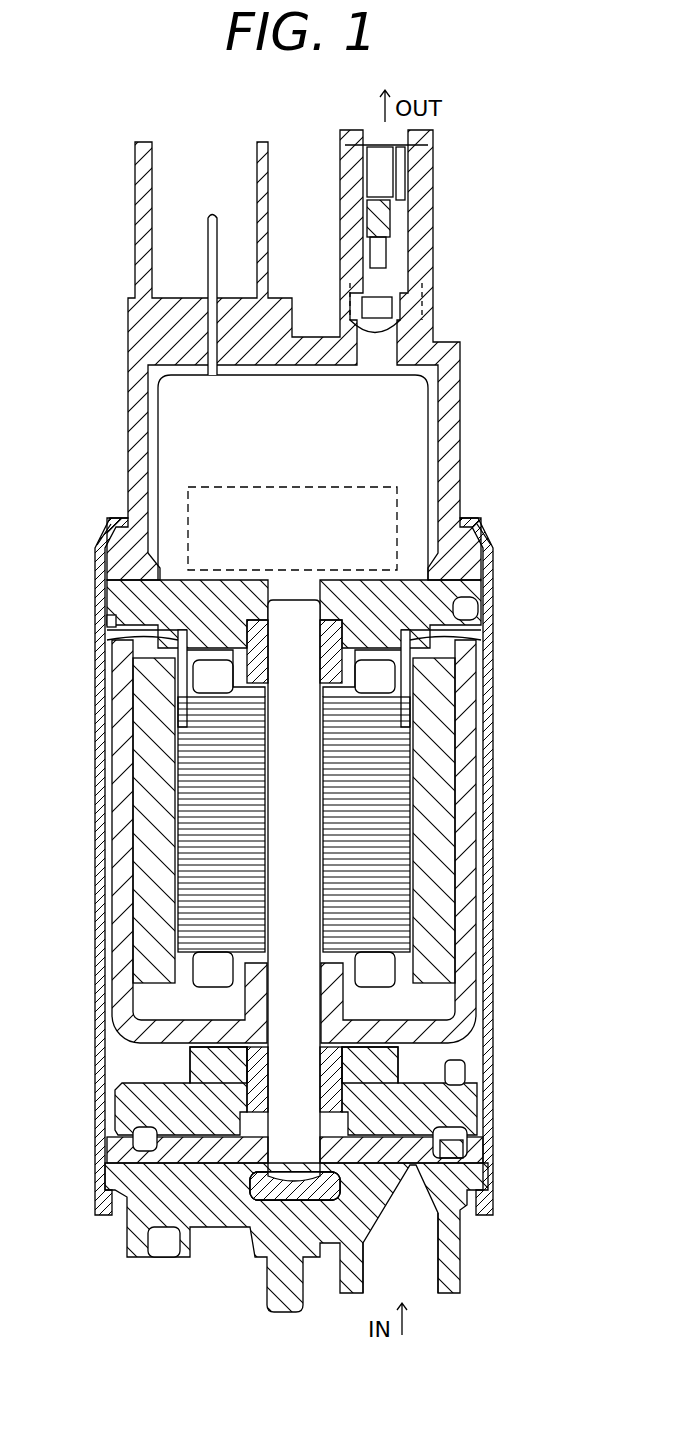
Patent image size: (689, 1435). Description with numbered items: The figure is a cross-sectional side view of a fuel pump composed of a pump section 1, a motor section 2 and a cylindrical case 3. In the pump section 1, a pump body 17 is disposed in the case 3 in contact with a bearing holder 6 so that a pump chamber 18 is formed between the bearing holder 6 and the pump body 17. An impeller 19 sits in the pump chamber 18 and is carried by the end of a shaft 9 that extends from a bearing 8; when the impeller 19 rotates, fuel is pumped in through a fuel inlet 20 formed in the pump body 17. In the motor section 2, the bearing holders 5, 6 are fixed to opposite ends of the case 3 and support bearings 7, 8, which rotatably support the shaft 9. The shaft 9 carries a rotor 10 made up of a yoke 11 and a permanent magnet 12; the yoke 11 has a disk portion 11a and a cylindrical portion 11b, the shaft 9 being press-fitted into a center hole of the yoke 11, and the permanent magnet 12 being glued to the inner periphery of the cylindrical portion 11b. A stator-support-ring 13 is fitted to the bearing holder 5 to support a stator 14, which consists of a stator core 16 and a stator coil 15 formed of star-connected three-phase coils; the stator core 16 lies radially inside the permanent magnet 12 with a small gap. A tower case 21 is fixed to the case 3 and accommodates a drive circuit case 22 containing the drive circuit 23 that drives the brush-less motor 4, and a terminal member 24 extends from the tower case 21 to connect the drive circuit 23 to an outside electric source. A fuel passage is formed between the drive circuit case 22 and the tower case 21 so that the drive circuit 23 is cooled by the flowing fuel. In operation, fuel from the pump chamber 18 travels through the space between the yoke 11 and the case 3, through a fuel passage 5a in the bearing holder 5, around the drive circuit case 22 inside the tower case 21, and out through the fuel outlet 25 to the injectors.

The pump section 1 is at (532, 1232).
The motor section 2 is at (537, 638).
The cylindrical case 3 is at (490, 780).
The brush-less motor 4 is at (509, 592).
The bearing holder 5 is at (168, 600).
The fuel passage 5a is at (478, 608).
The bearing holder 6 is at (122, 1113).
The bearing 7 is at (348, 627).
The bearing 8 is at (260, 1082).
The shaft 9 is at (283, 1012).
The rotor 10 is at (125, 853).
The yoke 11 is at (260, 842).
The disk portion 11a is at (162, 1038).
The cylindrical portion 11b is at (120, 722).
The permanent magnet 12 is at (147, 958).
The stator-support-ring 13 is at (112, 635).
The stator 14 is at (385, 840).
The stator coil 15 is at (382, 678).
The stator core 16 is at (357, 823).
The pump body 17 is at (147, 1218).
The pump chamber 18 is at (458, 1152).
The impeller 19 is at (418, 1158).
The fuel inlet 20 is at (428, 1280).
The tower case 21 is at (453, 452).
The drive circuit case 22 is at (420, 400).
The drive circuit 23 is at (268, 487).
The terminal member 24 is at (212, 213).
The fuel outlet 25 is at (412, 218).